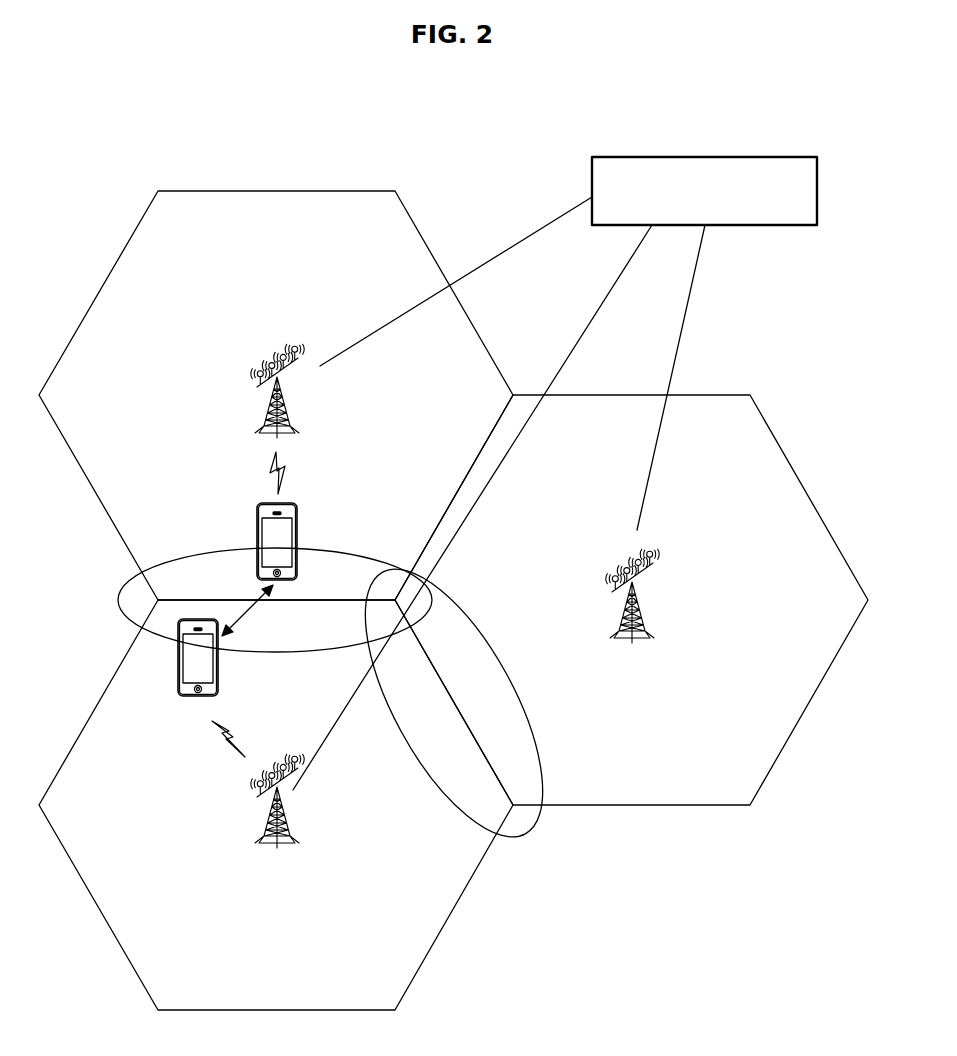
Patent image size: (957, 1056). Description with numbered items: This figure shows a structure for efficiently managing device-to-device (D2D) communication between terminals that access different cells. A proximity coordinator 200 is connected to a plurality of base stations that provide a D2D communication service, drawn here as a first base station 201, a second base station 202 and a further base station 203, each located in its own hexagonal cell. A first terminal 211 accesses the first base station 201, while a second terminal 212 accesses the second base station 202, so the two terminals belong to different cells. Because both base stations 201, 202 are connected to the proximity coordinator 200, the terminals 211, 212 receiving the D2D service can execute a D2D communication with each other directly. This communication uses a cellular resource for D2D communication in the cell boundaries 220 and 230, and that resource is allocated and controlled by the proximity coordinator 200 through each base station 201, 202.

The proximity coordinator 200 is at (703, 157).
The first base station 201 is at (290, 412).
The second base station 202 is at (289, 816).
The base station 203 is at (641, 609).
The first terminal 211 is at (295, 504).
The second terminal 212 is at (198, 700).
The cell boundary 220 is at (198, 556).
The cell boundary 230 is at (520, 718).